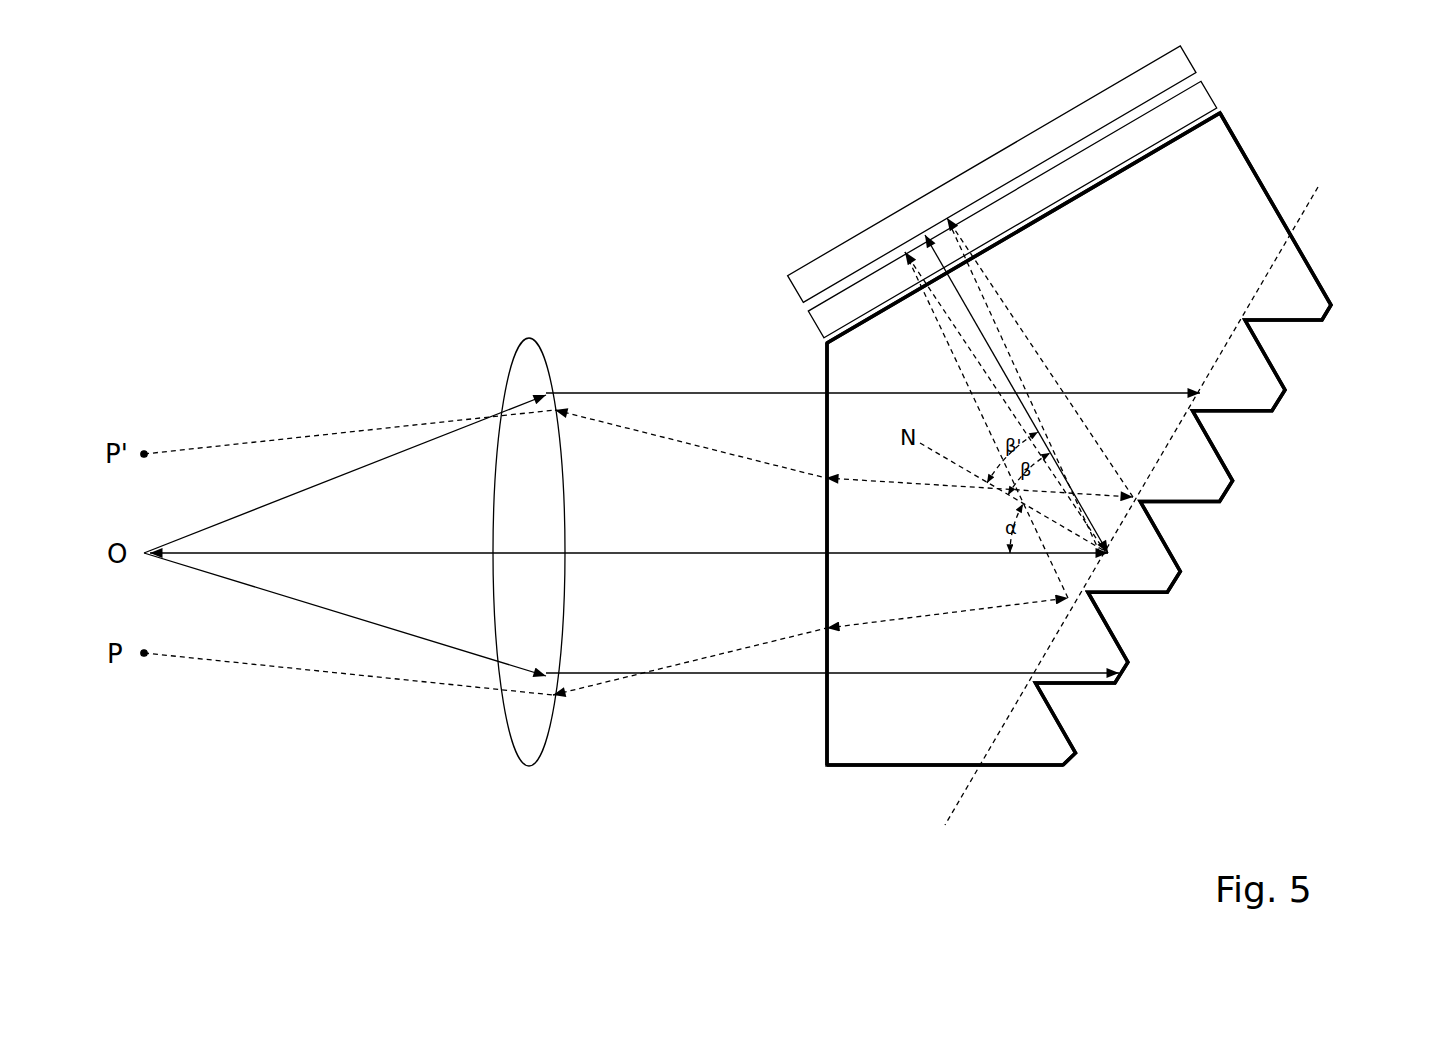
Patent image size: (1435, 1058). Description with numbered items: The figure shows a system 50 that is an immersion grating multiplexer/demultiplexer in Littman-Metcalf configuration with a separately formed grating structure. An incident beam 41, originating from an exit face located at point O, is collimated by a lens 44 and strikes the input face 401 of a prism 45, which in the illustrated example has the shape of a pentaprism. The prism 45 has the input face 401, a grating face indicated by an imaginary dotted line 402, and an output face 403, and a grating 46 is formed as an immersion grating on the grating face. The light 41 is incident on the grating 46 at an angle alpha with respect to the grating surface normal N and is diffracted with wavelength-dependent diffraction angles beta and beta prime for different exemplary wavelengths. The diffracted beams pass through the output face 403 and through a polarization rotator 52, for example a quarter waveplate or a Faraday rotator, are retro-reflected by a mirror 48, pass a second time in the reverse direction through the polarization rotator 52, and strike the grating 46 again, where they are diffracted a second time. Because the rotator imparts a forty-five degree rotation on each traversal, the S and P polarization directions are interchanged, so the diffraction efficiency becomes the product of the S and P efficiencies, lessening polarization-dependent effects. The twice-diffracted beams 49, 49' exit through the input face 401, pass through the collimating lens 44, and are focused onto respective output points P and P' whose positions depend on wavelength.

The incident beam 41 is at (354, 475).
The collimating lens 44 is at (528, 764).
The prism 45 is at (943, 757).
The grating 46 is at (1113, 627).
The mirror 48 is at (975, 173).
The twice-diffracted beam 49 is at (606, 676).
The twice-diffracted beam 49' is at (638, 415).
The system 50 is at (860, 823).
The polarization rotator 52 is at (1212, 95).
The input face 401 is at (822, 760).
The grating face 402 is at (1308, 210).
The output face 403 is at (1195, 130).